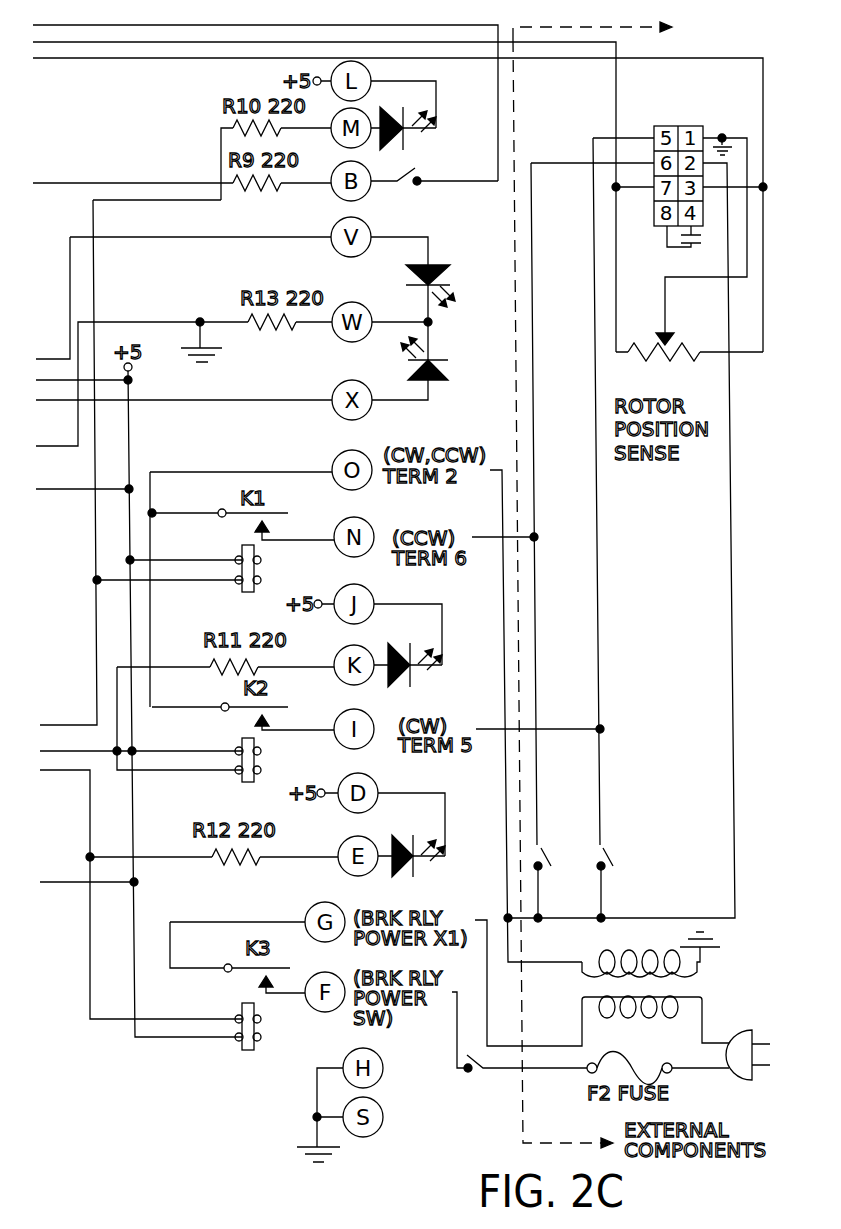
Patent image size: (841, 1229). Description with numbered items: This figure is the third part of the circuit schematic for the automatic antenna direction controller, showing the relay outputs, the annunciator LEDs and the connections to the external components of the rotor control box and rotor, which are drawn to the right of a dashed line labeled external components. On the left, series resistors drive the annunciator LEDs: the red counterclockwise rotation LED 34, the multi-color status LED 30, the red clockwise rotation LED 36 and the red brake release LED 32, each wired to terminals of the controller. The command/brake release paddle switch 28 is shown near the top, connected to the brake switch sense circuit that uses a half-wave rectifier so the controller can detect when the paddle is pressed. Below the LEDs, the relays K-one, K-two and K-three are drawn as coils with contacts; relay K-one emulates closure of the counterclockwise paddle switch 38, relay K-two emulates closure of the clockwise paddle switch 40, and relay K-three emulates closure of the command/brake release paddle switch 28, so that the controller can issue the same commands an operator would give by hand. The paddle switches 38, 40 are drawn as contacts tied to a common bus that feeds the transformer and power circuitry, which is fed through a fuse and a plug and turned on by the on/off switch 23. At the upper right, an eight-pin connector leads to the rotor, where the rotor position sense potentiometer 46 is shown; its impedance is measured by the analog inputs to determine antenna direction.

The on/off switch 23 is at (478, 1073).
The command/brake release paddle switch 28 is at (412, 188).
The multi-color status LED 30 is at (466, 262).
The red brake release LED 32 is at (415, 866).
The red counterclockwise rotation LED 34 is at (413, 133).
The red clockwise rotation LED 36 is at (412, 677).
The counterclockwise paddle switch 38 is at (562, 833).
The clockwise paddle switch 40 is at (607, 847).
The rotor position sense potentiometer 46 is at (645, 355).